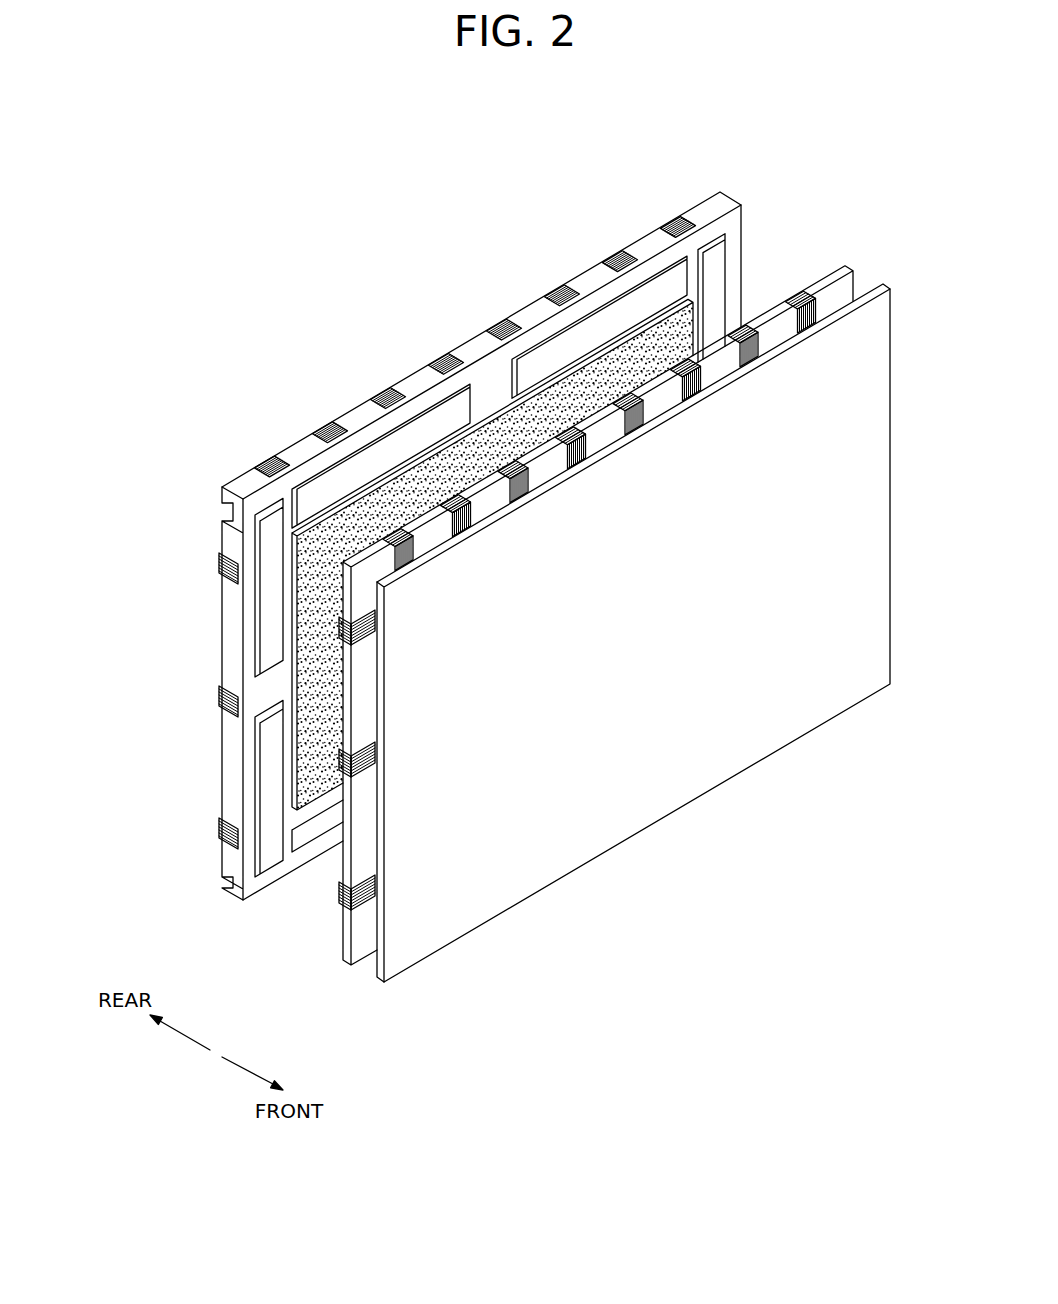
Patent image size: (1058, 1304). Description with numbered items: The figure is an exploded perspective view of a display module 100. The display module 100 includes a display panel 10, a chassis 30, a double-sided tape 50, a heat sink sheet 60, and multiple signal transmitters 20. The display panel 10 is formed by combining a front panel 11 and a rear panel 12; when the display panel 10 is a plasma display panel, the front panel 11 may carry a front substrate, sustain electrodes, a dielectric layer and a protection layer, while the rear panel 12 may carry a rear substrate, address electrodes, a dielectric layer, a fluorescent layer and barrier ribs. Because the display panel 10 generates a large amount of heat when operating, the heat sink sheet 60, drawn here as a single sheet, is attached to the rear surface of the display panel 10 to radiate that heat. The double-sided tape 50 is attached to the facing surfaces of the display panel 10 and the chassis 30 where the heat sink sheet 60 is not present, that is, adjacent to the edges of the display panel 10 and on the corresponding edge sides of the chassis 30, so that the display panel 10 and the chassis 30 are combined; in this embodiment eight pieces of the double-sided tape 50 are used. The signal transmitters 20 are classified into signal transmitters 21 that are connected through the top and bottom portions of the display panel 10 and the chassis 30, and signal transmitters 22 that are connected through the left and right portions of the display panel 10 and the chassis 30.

The display module 100 is at (832, 198).
The display panel 10 is at (601, 683).
The front panel 11 is at (381, 980).
The rear panel 12 is at (344, 958).
The signal transmitters 20 is at (502, 563).
The signal transmitters 21 is at (266, 458).
The signal transmitters 22 is at (218, 548).
The chassis 30 is at (434, 579).
The double-sided tape 50 is at (273, 858).
The heat sink sheet 60 is at (488, 437).